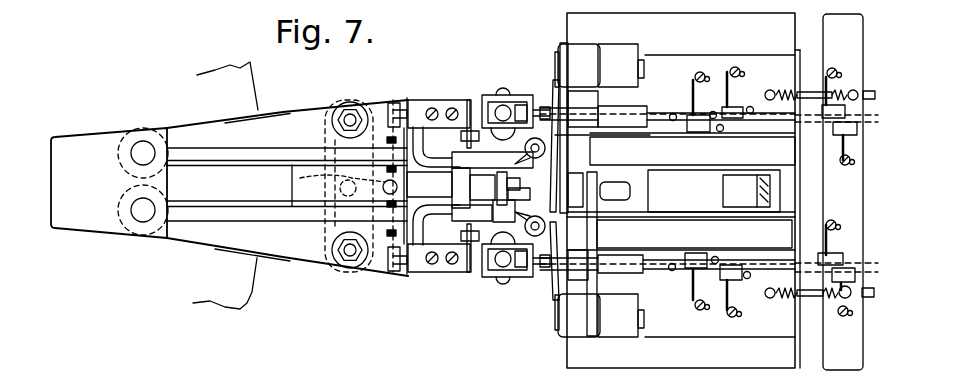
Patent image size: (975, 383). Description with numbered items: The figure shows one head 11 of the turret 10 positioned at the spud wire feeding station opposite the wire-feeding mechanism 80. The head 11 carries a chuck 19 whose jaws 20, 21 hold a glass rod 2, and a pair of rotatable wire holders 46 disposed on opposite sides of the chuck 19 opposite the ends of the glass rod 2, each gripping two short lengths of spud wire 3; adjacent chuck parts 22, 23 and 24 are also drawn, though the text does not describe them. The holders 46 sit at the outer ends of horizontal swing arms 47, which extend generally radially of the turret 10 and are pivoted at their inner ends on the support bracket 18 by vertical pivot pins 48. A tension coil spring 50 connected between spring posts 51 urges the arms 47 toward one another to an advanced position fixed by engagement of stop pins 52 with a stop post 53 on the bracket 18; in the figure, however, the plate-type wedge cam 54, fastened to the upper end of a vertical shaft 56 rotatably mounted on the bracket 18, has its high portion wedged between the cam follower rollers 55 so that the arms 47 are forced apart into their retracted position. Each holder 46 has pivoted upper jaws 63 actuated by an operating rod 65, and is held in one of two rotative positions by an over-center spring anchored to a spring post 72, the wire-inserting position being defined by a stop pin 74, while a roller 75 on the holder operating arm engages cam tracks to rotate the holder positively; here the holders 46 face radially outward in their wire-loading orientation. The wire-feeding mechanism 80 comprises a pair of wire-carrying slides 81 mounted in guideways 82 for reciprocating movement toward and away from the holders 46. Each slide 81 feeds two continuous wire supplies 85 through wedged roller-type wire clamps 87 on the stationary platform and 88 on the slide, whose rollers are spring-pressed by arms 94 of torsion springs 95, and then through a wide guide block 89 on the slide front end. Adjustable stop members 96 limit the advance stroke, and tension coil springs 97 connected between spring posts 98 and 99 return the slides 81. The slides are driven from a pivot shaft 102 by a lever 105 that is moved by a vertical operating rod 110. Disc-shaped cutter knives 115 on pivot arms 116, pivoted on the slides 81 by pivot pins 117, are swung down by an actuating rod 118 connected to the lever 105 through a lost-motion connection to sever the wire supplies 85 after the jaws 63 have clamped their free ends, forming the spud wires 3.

The glass rod 2 is at (504, 216).
The spud wire 3 is at (552, 100).
The turret 10 is at (252, 294).
The head 11 is at (428, 283).
The support bracket 18 is at (297, 110).
The chuck 19 is at (519, 198).
The chuck jaw 20 is at (520, 190).
The chuck jaw 21 is at (472, 183).
The lower plate 22 is at (462, 221).
The upper plate 23 is at (462, 153).
The body block 24 is at (429, 184).
The wire holder 46 is at (478, 88).
The swing arm 47 is at (232, 148).
The pivot pin 48 is at (143, 145).
The tension coil spring 50 is at (400, 280).
The spring post 51 is at (406, 100).
The stop pin 52 is at (390, 104).
The stop post 53 is at (336, 180).
The wedge cam 54 is at (328, 146).
The cam follower roller 55 is at (338, 104).
The vertical shaft 56 is at (292, 190).
The upper jaw 63 is at (520, 102).
The operating rod 65 is at (503, 105).
The spring post 72 is at (505, 88).
The stop pin 74 is at (470, 100).
The roller 75 is at (540, 158).
The wire-feeding mechanism 80 is at (548, 338).
The wire-carrying slide 81 is at (680, 60).
The guideway 82 is at (775, 62).
The wire supply 85 is at (766, 125).
The wire clamp 87 is at (826, 120).
The wire clamp 88 is at (698, 133).
The guide block 89 is at (635, 108).
The torsion spring arm 94 is at (810, 338).
The torsion spring 95 is at (702, 72).
The stop member 96 is at (870, 90).
The tension coil spring 97 is at (786, 90).
The spring post 98 is at (765, 94).
The spring post 99 is at (868, 90).
The pivot shaft 102 is at (735, 182).
The lever 105 is at (678, 216).
The operating rod 110 is at (615, 182).
The cutter knife 115 is at (562, 70).
The pivot arm 116 is at (586, 98).
The pivot pin 117 is at (646, 58).
The actuating rod 118 is at (580, 173).